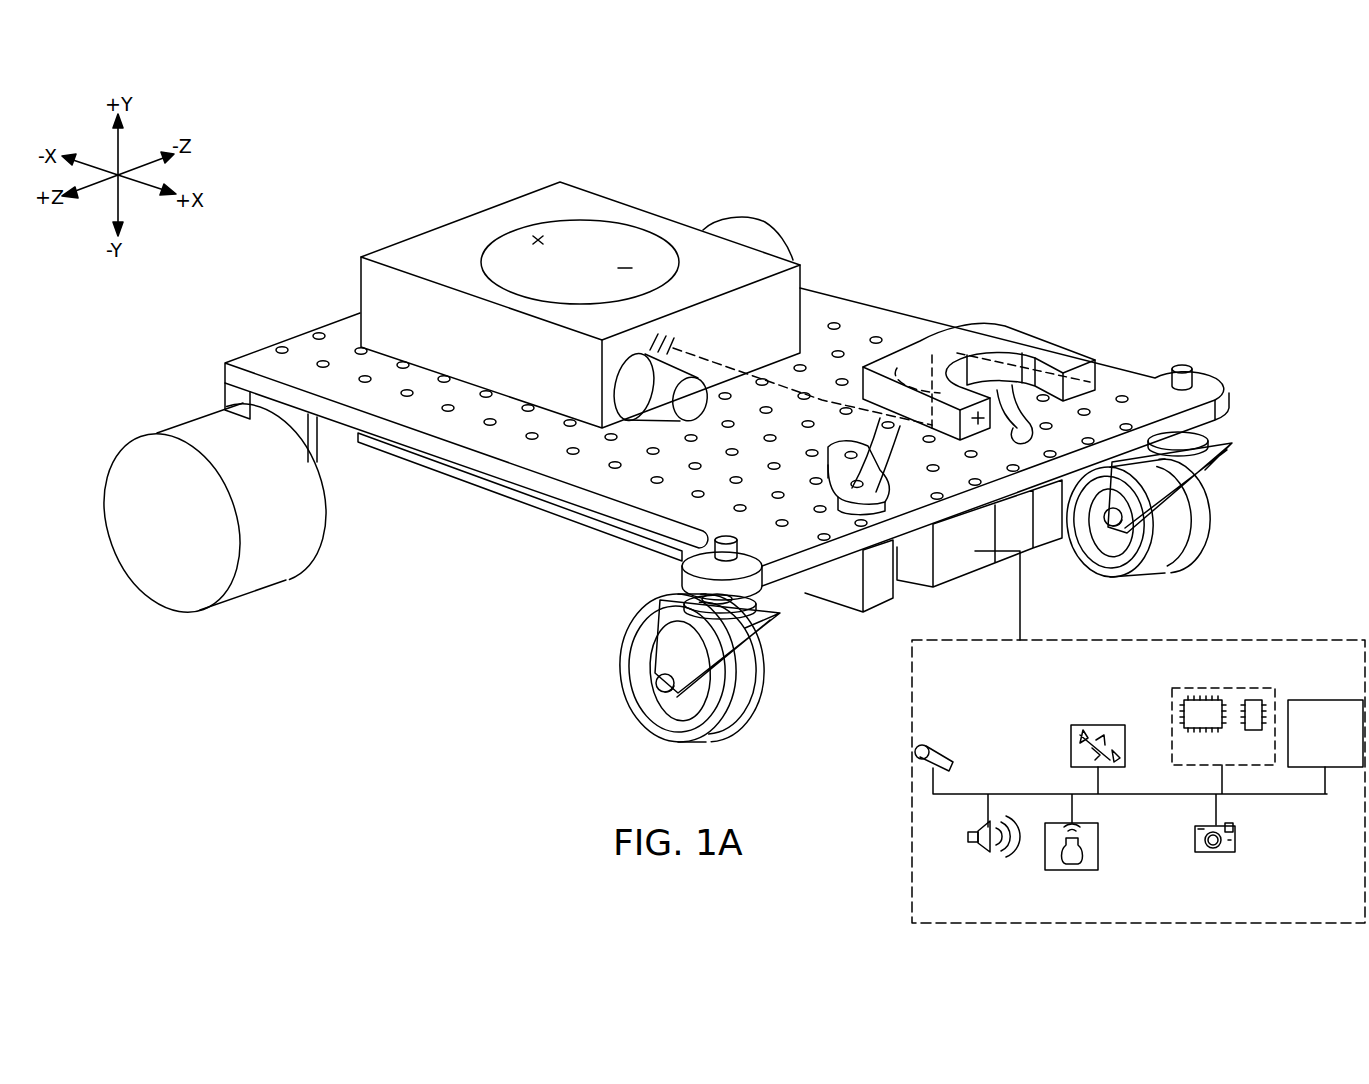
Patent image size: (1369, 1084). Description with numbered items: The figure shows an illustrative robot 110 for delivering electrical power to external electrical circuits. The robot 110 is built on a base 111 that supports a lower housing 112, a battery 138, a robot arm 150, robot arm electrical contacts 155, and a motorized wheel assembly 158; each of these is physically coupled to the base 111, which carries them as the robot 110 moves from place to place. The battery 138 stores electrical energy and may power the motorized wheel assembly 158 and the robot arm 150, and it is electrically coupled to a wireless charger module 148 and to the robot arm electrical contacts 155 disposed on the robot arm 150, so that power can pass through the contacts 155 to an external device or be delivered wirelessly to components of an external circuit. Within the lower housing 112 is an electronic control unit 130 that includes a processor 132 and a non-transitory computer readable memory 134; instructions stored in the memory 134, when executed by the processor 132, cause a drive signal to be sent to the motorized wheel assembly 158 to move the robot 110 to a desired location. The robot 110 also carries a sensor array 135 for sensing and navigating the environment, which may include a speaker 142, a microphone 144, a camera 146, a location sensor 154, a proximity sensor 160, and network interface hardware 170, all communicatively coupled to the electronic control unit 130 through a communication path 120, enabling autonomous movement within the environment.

The robot 110 is at (656, 412).
The base 111 is at (536, 480).
The lower housing 112 is at (1045, 549).
The communication path 120 is at (950, 797).
The electronic control unit 130 is at (1172, 712).
The processor 132 is at (1200, 698).
The non-transitory computer readable memory 134 is at (1254, 698).
The sensor array 135 is at (1275, 640).
The battery 138 is at (497, 207).
The speaker 142 is at (978, 846).
The microphone 144 is at (935, 758).
The camera 146 is at (1212, 852).
The wireless charger module 148 is at (614, 221).
The robot arm 150 is at (985, 326).
The location sensor 154 is at (1071, 741).
The robot arm electrical contacts 155 is at (982, 430).
The motorized wheel assembly 158 is at (214, 569).
The proximity sensor 160 is at (1322, 700).
The network interface hardware 170 is at (1072, 870).